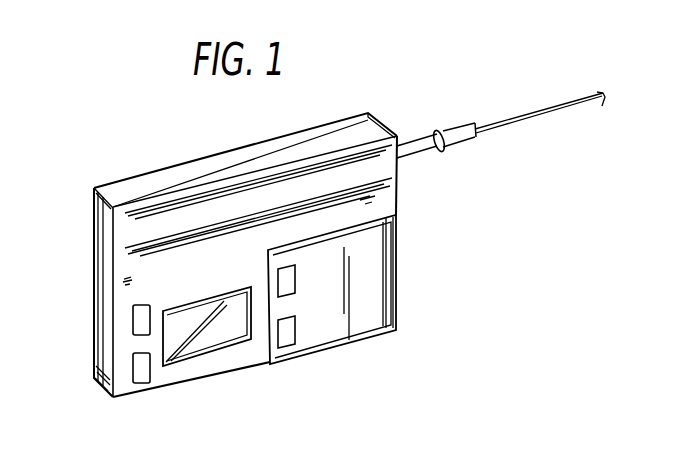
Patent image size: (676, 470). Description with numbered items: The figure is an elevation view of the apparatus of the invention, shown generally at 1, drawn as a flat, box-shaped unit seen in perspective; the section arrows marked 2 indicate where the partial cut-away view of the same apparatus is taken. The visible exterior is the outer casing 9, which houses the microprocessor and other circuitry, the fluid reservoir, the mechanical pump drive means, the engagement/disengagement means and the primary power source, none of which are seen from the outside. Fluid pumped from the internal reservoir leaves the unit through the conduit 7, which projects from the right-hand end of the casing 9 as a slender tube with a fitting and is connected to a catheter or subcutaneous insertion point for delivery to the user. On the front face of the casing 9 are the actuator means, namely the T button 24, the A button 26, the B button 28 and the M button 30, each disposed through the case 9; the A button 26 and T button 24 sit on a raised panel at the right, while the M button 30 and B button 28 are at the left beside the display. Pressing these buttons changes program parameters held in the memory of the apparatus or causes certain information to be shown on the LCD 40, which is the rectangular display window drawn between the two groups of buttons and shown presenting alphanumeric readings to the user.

The apparatus 1 is at (400, 297).
The partial cut-away view of the apparatus 2 is at (435, 194).
The conduit 7 is at (415, 142).
The outer casing 9 is at (140, 184).
The T button 24 is at (290, 348).
The A button 26 is at (295, 272).
The B button 28 is at (141, 385).
The M button 30 is at (143, 304).
The LCD 40 is at (190, 354).